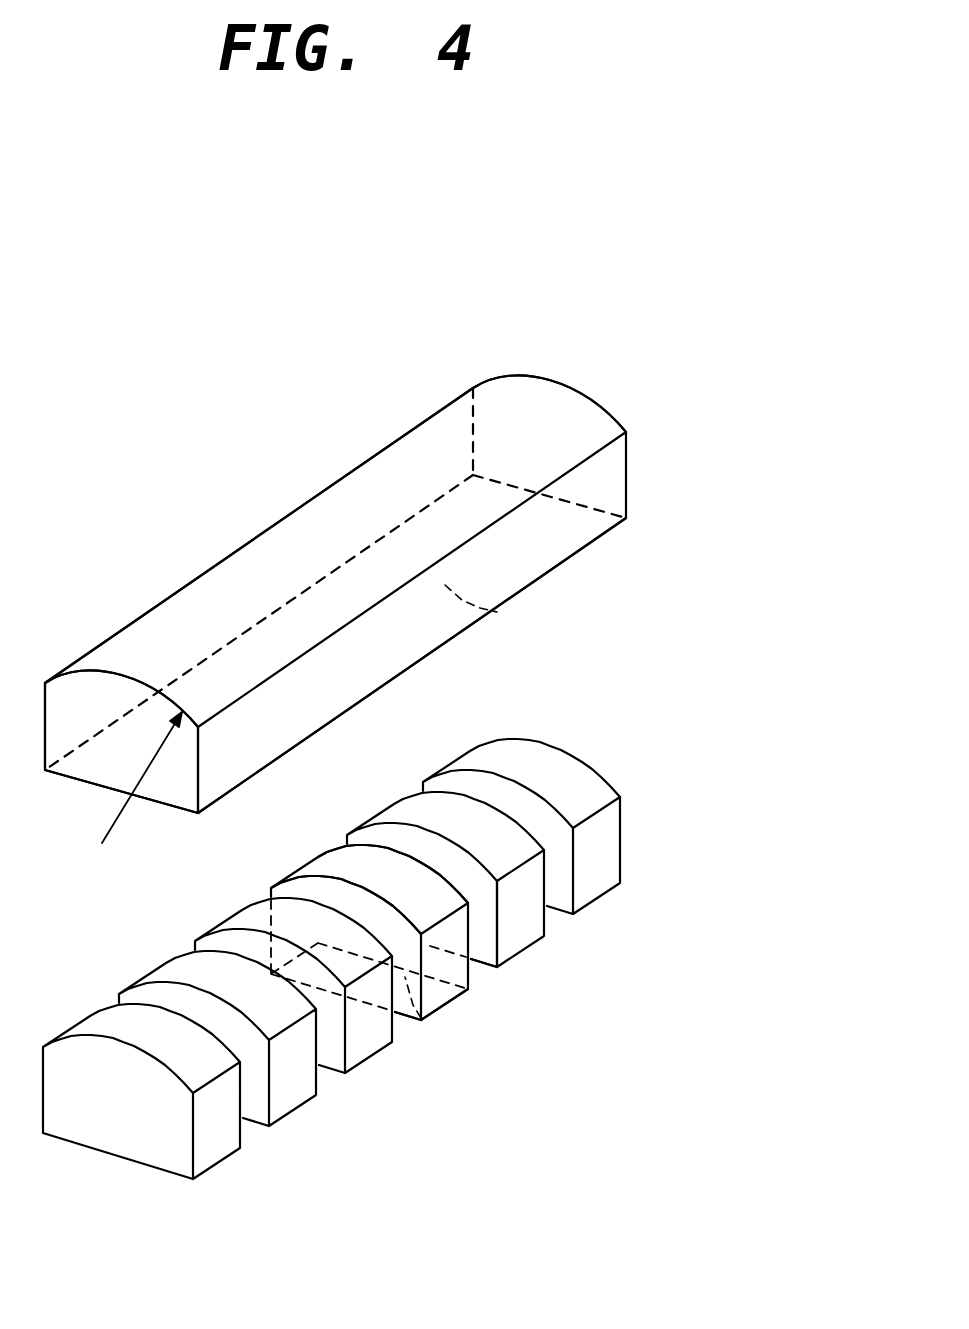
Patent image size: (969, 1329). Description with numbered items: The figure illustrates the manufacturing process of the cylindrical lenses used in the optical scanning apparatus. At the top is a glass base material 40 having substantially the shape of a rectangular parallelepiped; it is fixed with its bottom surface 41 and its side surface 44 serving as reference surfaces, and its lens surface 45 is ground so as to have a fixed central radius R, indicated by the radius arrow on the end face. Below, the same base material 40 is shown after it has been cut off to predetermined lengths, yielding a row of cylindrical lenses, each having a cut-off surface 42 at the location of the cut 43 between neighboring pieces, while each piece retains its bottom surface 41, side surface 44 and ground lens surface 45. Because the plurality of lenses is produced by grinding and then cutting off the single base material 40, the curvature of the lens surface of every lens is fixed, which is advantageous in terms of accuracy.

The glass base material 40 is at (403, 437).
The bottom surface 41 is at (503, 607).
The cut-off surface 42 is at (473, 883).
The dividing cut between segments 43 is at (342, 868).
The side surface 44 is at (330, 678).
The lens surface 45 is at (527, 423).
The central radius R is at (119, 779).